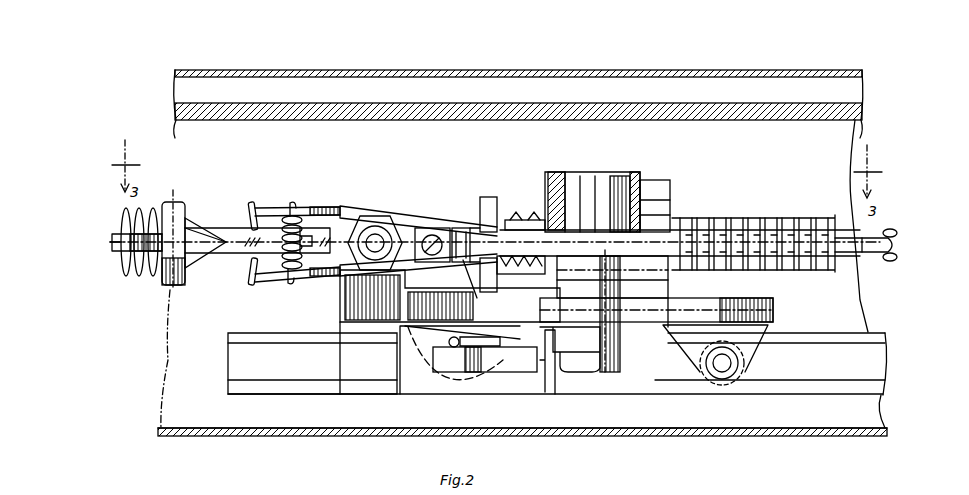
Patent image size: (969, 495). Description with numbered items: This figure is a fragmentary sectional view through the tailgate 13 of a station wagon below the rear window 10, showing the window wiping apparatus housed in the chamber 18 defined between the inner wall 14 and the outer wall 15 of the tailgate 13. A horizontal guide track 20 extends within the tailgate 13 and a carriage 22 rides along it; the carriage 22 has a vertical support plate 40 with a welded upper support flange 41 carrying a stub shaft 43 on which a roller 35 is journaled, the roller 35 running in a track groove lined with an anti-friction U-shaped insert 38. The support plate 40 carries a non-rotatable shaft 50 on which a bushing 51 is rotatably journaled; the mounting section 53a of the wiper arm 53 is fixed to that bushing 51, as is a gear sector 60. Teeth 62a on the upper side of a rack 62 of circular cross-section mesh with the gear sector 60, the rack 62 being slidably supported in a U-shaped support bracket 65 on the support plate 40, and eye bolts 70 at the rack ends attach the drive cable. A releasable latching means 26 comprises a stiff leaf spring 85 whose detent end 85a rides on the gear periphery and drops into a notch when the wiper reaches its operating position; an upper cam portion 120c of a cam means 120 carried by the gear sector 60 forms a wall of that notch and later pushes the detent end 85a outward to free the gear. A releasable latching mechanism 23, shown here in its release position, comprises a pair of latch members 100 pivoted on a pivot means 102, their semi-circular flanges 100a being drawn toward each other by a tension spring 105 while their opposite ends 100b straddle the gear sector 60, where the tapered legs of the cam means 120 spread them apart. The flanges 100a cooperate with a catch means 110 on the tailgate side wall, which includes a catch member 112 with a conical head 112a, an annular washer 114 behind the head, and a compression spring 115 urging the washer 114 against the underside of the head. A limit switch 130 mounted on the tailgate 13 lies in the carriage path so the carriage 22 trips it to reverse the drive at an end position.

The rear window 10 is at (735, 112).
The rear tailgate 13 is at (270, 433).
The inner wall 14 is at (592, 74).
The outer wall 15 is at (612, 434).
The chamber 18 is at (374, 410).
The guide track 20 is at (246, 330).
The carriage 22 is at (775, 298).
The releasable latching mechanism 23 is at (214, 292).
The releasable latching means 26 is at (460, 228).
The roller 35 is at (748, 340).
The U-shaped insert 38 is at (266, 370).
The support plate 40 is at (682, 312).
The upper support flange 41 is at (745, 340).
The stub shaft 43 is at (723, 374).
The non-rotatable shaft 50 is at (600, 195).
The bushing 51 is at (587, 190).
The wiper arm 53 is at (552, 195).
The mounting section 53a is at (626, 175).
The gear sector 60 is at (510, 228).
The rack 62 is at (776, 222).
The rack teeth 62a is at (726, 216).
The U-shaped support bracket 65 is at (660, 182).
The eye bolts 70 is at (868, 256).
The leaf spring 85 is at (460, 262).
The detent end 85a is at (503, 250).
The latch members 100 is at (340, 208).
The semi-circular flanges 100a is at (255, 204).
The latch member ends 100b is at (443, 222).
The pivot means 102 is at (378, 232).
The tension spring 105 is at (300, 212).
The catch means 110 is at (118, 246).
The catch member 112 is at (118, 258).
The conical head 112a is at (205, 240).
The annular washer 114 is at (176, 212).
The compression spring 115 is at (168, 284).
The cam means 120 is at (492, 205).
The upper cam portion 120c is at (498, 276).
The limit switch 130 is at (518, 372).